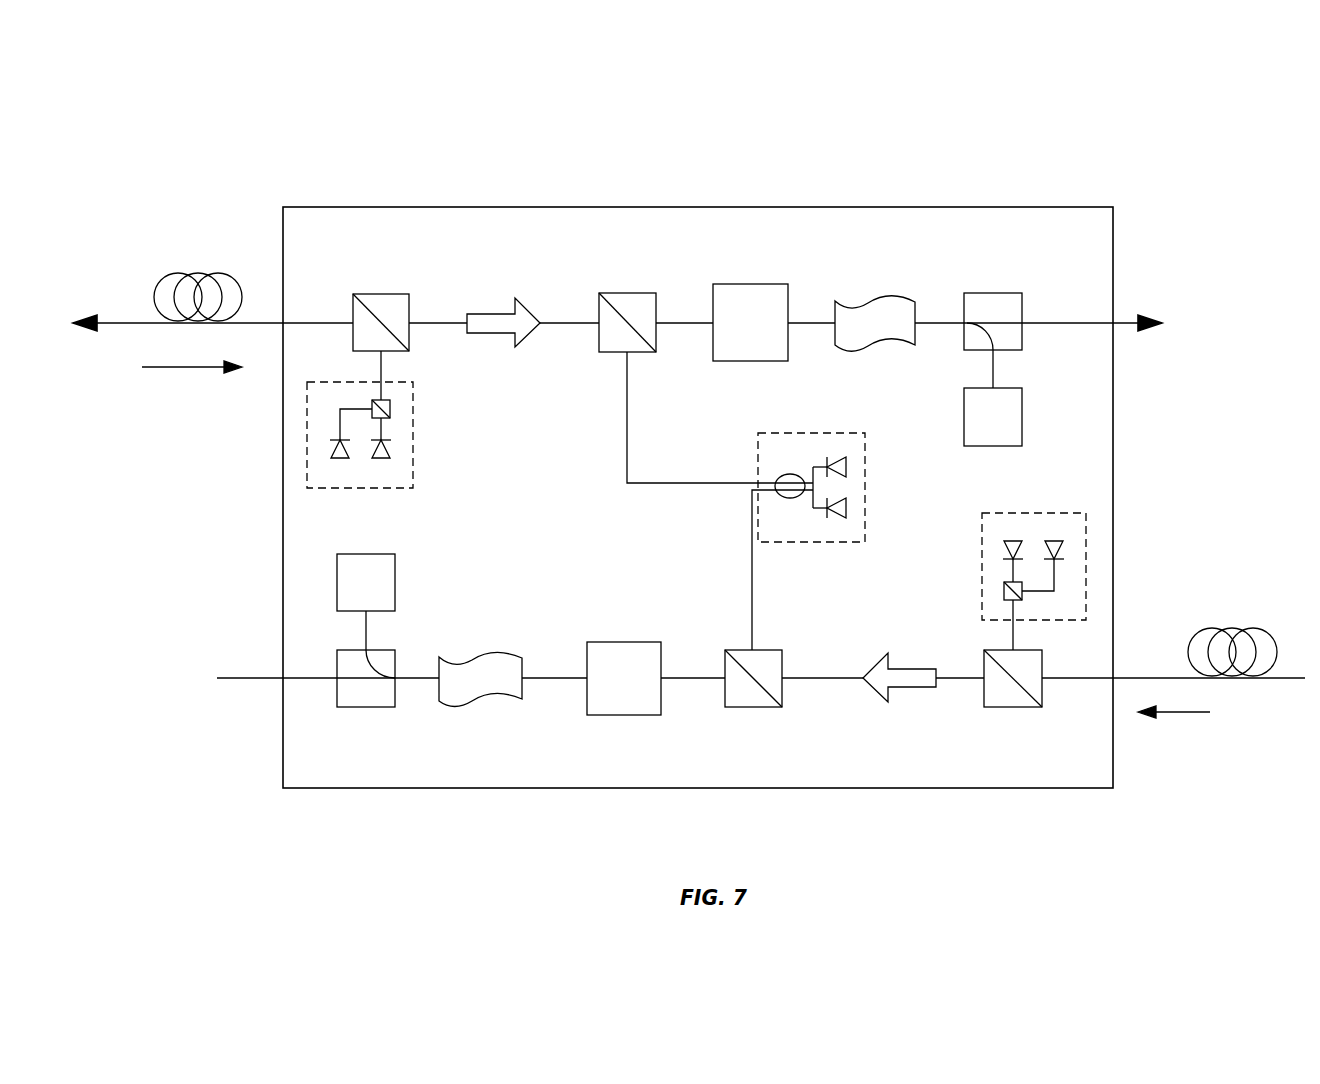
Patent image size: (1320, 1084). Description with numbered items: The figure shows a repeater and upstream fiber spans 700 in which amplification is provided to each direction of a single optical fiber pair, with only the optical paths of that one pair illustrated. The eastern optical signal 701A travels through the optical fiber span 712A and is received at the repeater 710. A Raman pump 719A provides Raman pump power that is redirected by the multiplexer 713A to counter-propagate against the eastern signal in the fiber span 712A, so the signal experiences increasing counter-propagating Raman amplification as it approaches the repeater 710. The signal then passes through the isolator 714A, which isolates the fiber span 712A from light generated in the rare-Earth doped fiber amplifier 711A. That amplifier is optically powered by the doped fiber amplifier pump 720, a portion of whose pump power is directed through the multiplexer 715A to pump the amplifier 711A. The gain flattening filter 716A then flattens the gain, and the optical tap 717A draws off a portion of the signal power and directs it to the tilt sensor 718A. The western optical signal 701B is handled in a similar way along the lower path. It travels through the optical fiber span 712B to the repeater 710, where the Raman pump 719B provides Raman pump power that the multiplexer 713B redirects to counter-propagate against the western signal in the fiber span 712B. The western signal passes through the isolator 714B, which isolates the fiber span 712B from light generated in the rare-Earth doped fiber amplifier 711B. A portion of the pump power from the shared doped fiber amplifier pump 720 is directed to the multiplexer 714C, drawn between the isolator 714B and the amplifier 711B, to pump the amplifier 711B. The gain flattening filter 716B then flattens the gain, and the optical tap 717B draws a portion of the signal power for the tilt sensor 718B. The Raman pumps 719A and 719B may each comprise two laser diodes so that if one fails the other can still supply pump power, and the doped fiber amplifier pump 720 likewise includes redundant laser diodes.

The repeater and upstream fiber spans 700 is at (712, 135).
The repeater 710 is at (975, 205).
The optical fiber span 712A is at (198, 272).
The optical fiber span 712B is at (1232, 627).
The eastern optical signal 701A is at (188, 372).
The western optical signal 701B is at (1182, 713).
The multiplexer 713A is at (377, 292).
The multiplexer 713B is at (1007, 709).
The isolator 714A is at (497, 313).
The isolator 714B is at (912, 688).
The optical splitter 714C is at (743, 708).
The multiplexer 715A is at (625, 288).
The rare-Earth doped fiber amplifier 711A is at (755, 284).
The rare-Earth doped fiber amplifier 711B is at (618, 717).
The gain flattening filter 716A is at (893, 293).
The gain flattening filter 716B is at (458, 707).
The optical tap 717A is at (999, 292).
The optical tap 717B is at (367, 708).
The tilt sensor 718A is at (1016, 430).
The tilt sensor 718B is at (389, 595).
The Raman pump 719A is at (413, 432).
The Raman pump 719B is at (1015, 512).
The doped fiber amplifier pump 720 is at (828, 433).